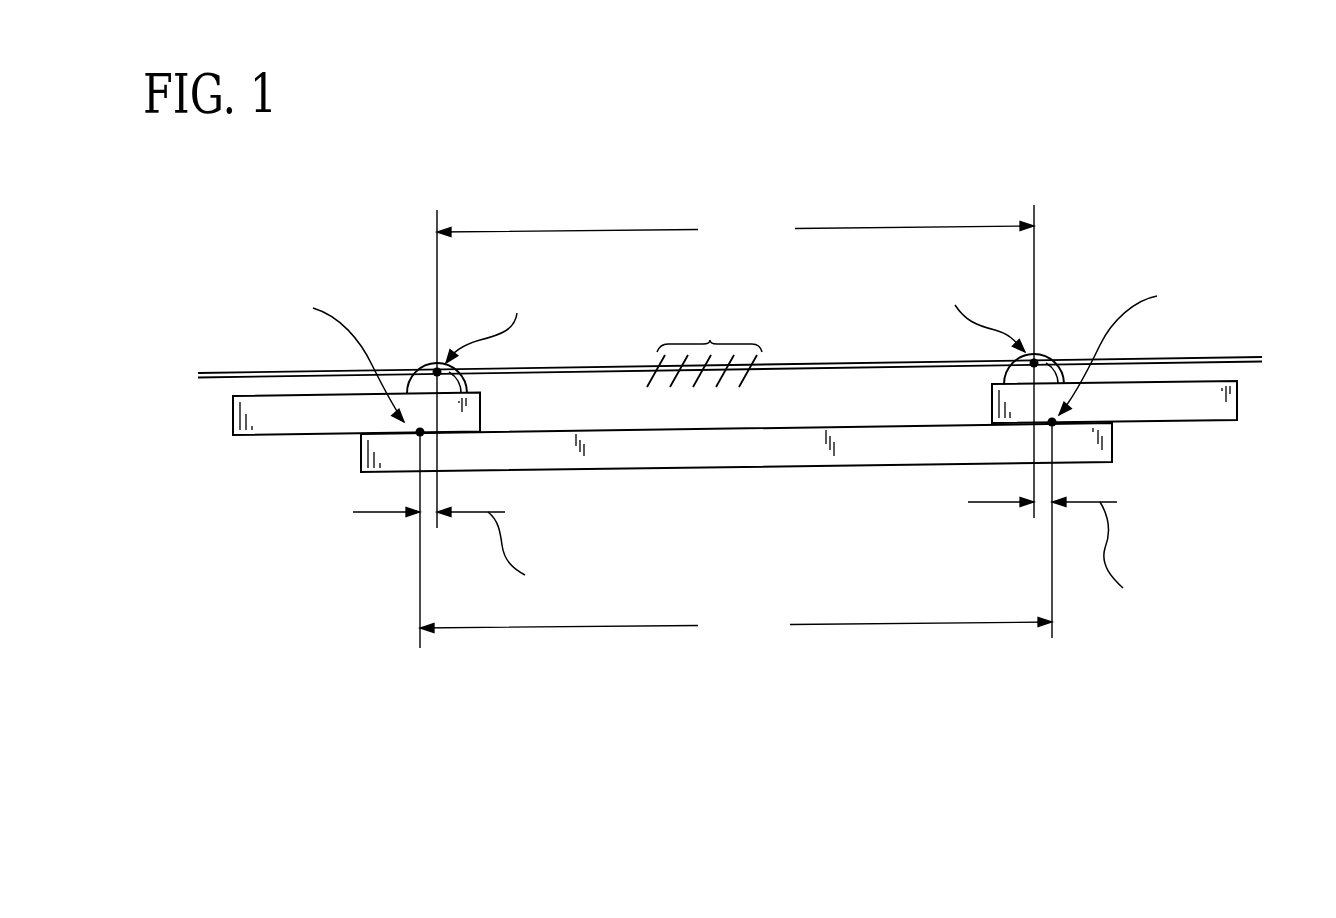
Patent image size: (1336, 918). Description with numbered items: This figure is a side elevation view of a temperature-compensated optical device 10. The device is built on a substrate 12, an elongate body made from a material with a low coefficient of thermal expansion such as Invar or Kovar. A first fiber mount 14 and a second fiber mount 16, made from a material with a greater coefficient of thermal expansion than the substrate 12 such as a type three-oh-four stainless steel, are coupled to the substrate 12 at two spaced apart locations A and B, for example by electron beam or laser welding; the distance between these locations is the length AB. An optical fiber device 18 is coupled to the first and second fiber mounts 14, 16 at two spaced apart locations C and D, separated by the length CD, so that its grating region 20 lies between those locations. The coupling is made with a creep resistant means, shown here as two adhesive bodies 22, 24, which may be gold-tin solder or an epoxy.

The temperature-compensated optical device 10 is at (325, 573).
The substrate 12 is at (718, 428).
The first fiber mount 14 is at (275, 435).
The second fiber mount 16 is at (1195, 422).
The optical fiber device 18 is at (1218, 357).
The grating region 20 is at (710, 340).
The adhesive body 22 is at (425, 360).
The adhesive body 24 is at (1045, 358).